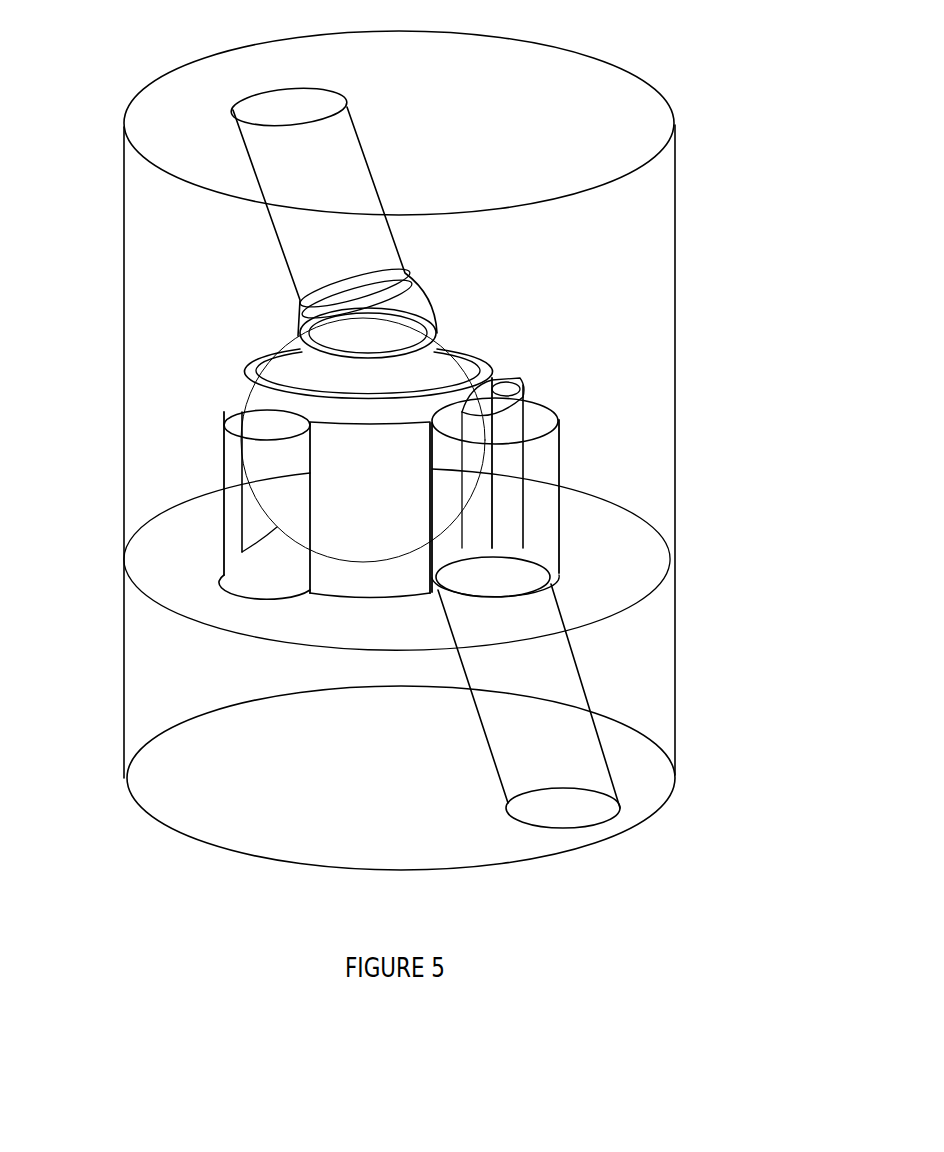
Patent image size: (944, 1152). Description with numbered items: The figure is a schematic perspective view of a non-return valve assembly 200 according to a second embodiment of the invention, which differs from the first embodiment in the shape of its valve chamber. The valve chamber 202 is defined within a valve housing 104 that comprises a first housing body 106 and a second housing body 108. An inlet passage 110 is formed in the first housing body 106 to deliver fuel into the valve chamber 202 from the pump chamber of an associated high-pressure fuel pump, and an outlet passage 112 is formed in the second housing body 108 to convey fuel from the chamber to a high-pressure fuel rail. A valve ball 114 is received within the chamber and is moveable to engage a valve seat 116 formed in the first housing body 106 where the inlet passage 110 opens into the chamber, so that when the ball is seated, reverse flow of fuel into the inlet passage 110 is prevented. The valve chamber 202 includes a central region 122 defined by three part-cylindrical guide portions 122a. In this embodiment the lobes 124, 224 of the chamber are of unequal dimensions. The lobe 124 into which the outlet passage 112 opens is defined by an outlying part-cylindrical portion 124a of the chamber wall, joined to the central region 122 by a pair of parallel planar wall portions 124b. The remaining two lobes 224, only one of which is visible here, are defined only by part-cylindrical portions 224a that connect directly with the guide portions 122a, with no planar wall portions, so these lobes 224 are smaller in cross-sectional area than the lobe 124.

The non-return valve assembly 200 is at (83, 66).
The valve housing 104 is at (680, 91).
The first housing body 106 is at (660, 400).
The second housing body 108 is at (668, 699).
The inlet passage 110 is at (287, 220).
The outlet passage 112 is at (578, 795).
The valve ball 114 is at (353, 478).
The valve seat 116 is at (287, 355).
The central region 122 is at (335, 576).
The part-cylindrical guide portions 122a is at (350, 582).
The lobe 124 is at (557, 522).
The outlying part-cylindrical portion 124a is at (553, 466).
The planar wall portions 124b is at (510, 495).
The lobes 224 is at (212, 480).
The part-cylindrical portions 224a is at (226, 538).
The valve chamber 202 is at (518, 374).